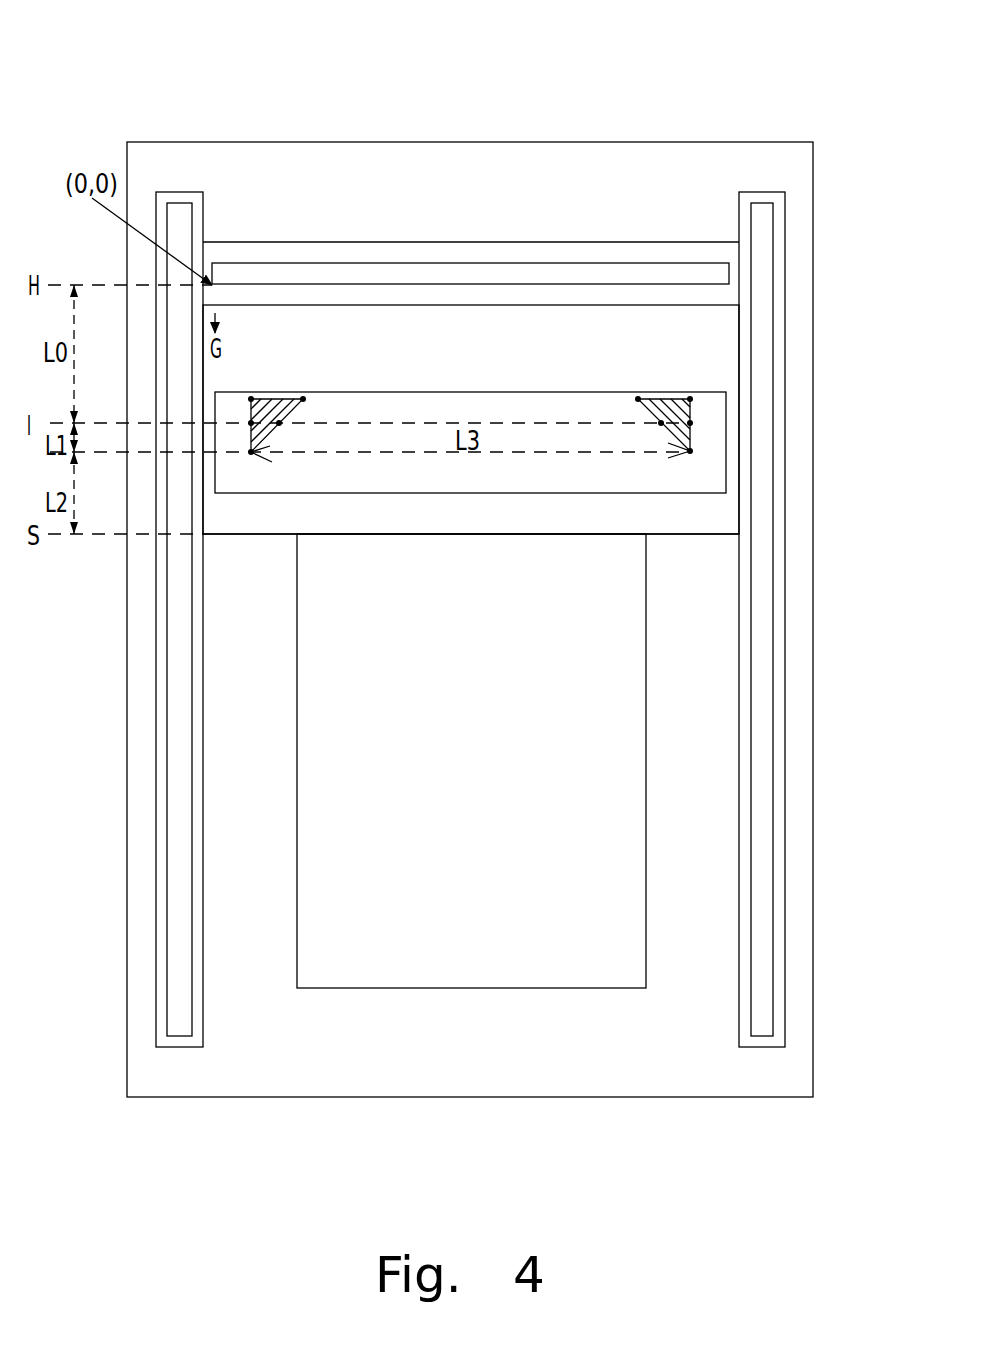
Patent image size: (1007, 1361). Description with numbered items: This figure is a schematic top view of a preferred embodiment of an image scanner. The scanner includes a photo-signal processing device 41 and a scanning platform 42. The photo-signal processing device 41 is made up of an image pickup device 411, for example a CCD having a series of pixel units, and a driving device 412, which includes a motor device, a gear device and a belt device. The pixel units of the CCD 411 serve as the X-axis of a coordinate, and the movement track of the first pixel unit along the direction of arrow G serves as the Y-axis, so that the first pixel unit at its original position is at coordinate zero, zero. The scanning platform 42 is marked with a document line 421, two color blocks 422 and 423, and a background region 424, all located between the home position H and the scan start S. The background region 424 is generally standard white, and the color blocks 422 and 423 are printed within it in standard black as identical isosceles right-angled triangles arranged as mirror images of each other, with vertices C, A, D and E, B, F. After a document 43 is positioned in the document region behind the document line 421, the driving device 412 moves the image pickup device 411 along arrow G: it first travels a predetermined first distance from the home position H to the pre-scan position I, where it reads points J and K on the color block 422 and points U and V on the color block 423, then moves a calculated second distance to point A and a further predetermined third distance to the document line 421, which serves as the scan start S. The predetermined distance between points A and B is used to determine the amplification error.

The photo-signal processing device 41 is at (481, 532).
The image pickup device 411 is at (715, 273).
The driving device 412 is at (180, 830).
The scanning platform 42 is at (548, 500).
The document line 421 is at (674, 534).
The color block 422 is at (252, 410).
The color block 423 is at (662, 398).
The background region 424 is at (450, 403).
The document 43 is at (613, 795).